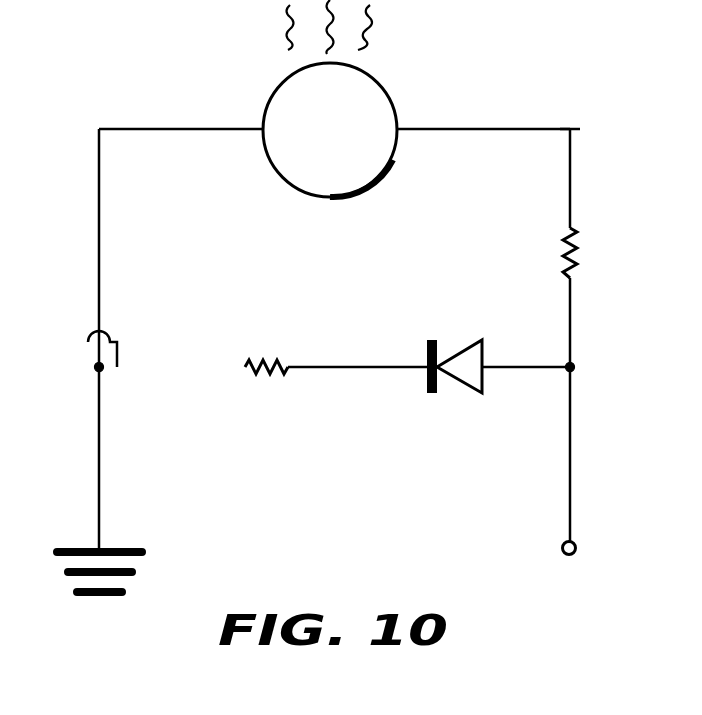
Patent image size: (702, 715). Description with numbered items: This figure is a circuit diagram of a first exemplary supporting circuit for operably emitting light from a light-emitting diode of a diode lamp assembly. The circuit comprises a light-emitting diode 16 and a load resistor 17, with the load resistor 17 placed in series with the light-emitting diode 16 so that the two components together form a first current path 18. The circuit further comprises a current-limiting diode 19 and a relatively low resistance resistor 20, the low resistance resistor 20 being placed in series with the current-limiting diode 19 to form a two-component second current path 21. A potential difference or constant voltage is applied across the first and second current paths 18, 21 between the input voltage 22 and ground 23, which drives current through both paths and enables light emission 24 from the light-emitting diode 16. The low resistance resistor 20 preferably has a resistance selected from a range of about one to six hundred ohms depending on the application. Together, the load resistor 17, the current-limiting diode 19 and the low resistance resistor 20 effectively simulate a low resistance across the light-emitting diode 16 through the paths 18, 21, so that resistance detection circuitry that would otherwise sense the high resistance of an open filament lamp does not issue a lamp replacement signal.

The light-emitting diode 16 is at (382, 87).
The load resistor 17 is at (563, 248).
The first current path 18 is at (570, 128).
The current-limiting diode 19 is at (468, 345).
The low resistance resistor 20 is at (268, 352).
The second current path 21 is at (88, 342).
The input voltage 22 is at (577, 545).
The ground 23 is at (80, 548).
The light emission 24 is at (375, 30).